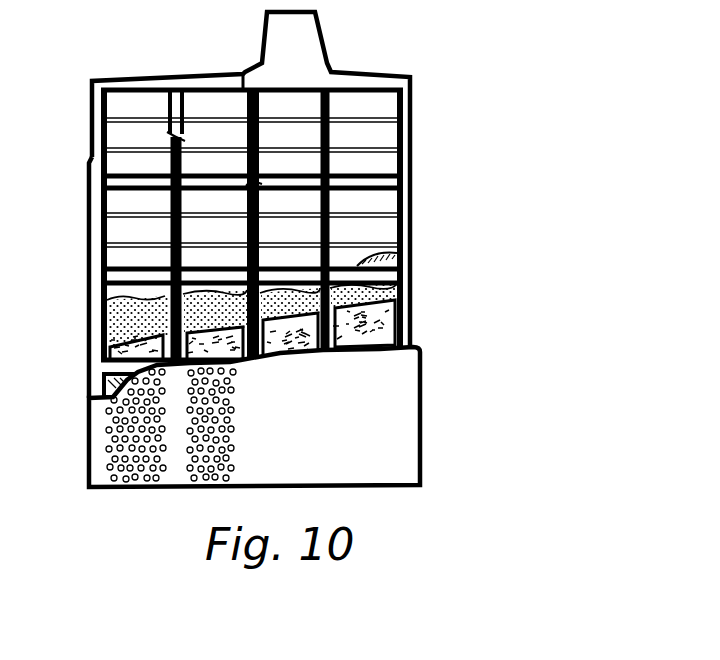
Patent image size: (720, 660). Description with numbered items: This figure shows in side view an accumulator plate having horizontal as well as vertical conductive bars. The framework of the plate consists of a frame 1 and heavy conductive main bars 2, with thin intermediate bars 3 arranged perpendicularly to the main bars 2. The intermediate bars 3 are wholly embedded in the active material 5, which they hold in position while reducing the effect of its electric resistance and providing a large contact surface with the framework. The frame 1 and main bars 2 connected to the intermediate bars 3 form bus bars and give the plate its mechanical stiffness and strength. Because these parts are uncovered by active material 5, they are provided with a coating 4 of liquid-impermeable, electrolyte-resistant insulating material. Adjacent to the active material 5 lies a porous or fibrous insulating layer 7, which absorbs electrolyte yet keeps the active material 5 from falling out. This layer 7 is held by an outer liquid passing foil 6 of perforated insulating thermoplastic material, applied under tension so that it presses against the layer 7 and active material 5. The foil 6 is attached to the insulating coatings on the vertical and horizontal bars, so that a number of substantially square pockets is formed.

The frame 1 is at (98, 110).
The main bars 2 is at (174, 90).
The intermediate bars 3 is at (388, 105).
The coating 4 is at (97, 182).
The active material 5 is at (378, 293).
The outer liquid passing foil 6 is at (382, 382).
The layer 7 is at (393, 318).